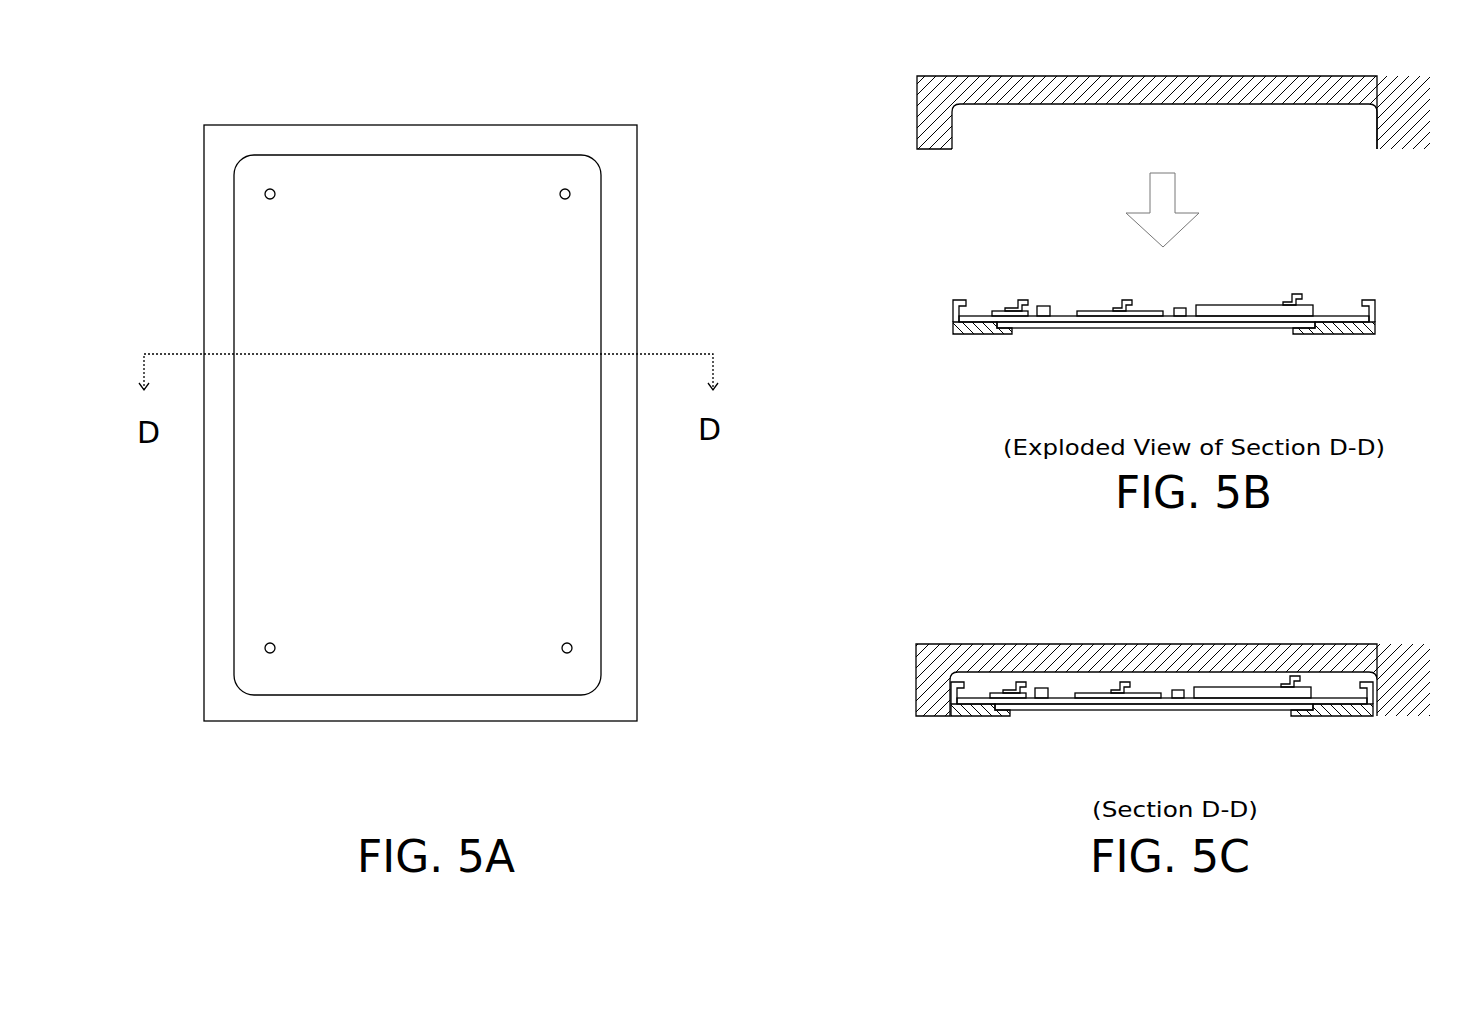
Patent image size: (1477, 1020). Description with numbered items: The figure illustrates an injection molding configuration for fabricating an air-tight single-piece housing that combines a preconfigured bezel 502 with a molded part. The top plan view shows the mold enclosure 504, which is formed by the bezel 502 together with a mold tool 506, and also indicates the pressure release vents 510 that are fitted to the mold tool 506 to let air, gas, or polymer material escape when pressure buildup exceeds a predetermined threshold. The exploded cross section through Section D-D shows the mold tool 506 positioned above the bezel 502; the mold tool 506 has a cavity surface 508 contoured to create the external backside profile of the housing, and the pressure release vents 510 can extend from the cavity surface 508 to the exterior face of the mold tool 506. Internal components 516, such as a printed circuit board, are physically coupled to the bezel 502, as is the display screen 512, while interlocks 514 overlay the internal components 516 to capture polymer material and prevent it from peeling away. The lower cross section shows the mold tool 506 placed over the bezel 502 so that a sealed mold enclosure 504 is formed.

In FIG. 5B, the bezel 502 is at (1340, 334).
In FIG. 5C, the bezel 502 is at (1196, 728).
In FIG. 5A, the mold enclosure 504 is at (637, 212).
In FIG. 5B, the mold tool 506 is at (1183, 75).
In FIG. 5C, the mold tool 506 is at (1183, 643).
In FIG. 5B, the cavity surface 508 is at (1233, 106).
In FIG. 5A, the pressure release vents 510 is at (571, 652).
In FIG. 5B, the display screen 512 is at (1073, 329).
In FIG. 5C, the display screen 512 is at (1154, 738).
In FIG. 5B, the interlocks 514 is at (1018, 300).
In FIG. 5B, the internal components 516 is at (1333, 317).